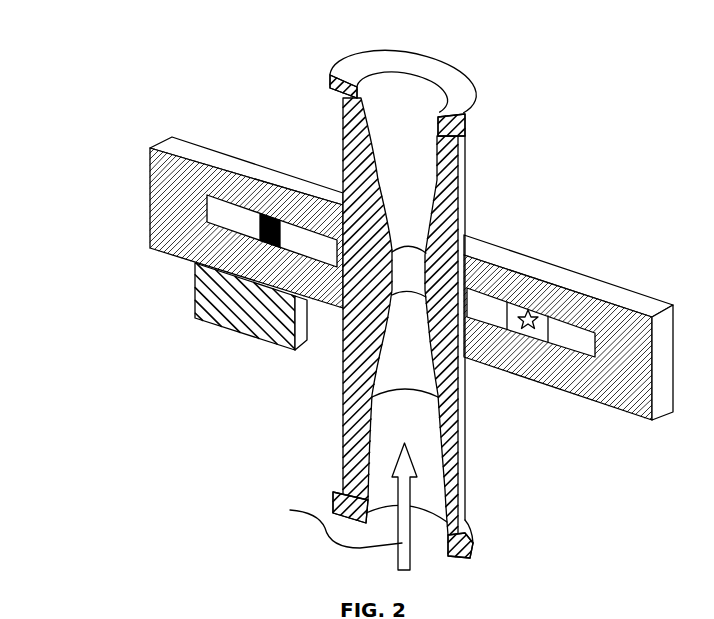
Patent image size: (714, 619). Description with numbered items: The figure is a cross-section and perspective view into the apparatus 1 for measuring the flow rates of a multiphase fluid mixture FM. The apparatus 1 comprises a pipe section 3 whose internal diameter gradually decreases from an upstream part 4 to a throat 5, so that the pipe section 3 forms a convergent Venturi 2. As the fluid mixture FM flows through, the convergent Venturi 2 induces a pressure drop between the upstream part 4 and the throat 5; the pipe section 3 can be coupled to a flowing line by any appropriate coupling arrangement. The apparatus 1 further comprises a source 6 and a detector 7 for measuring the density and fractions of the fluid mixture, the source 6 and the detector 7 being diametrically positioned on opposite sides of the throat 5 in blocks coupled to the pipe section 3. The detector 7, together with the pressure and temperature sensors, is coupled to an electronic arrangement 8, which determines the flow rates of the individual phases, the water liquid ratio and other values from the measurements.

The apparatus 1 is at (93, 100).
The convergent Venturi 2 is at (381, 297).
The pipe section 3 is at (455, 88).
The upstream part 4 is at (427, 440).
The throat 5 is at (412, 263).
The source 6 is at (517, 308).
The detector 7 is at (262, 213).
The electronic arrangement 8 is at (217, 312).